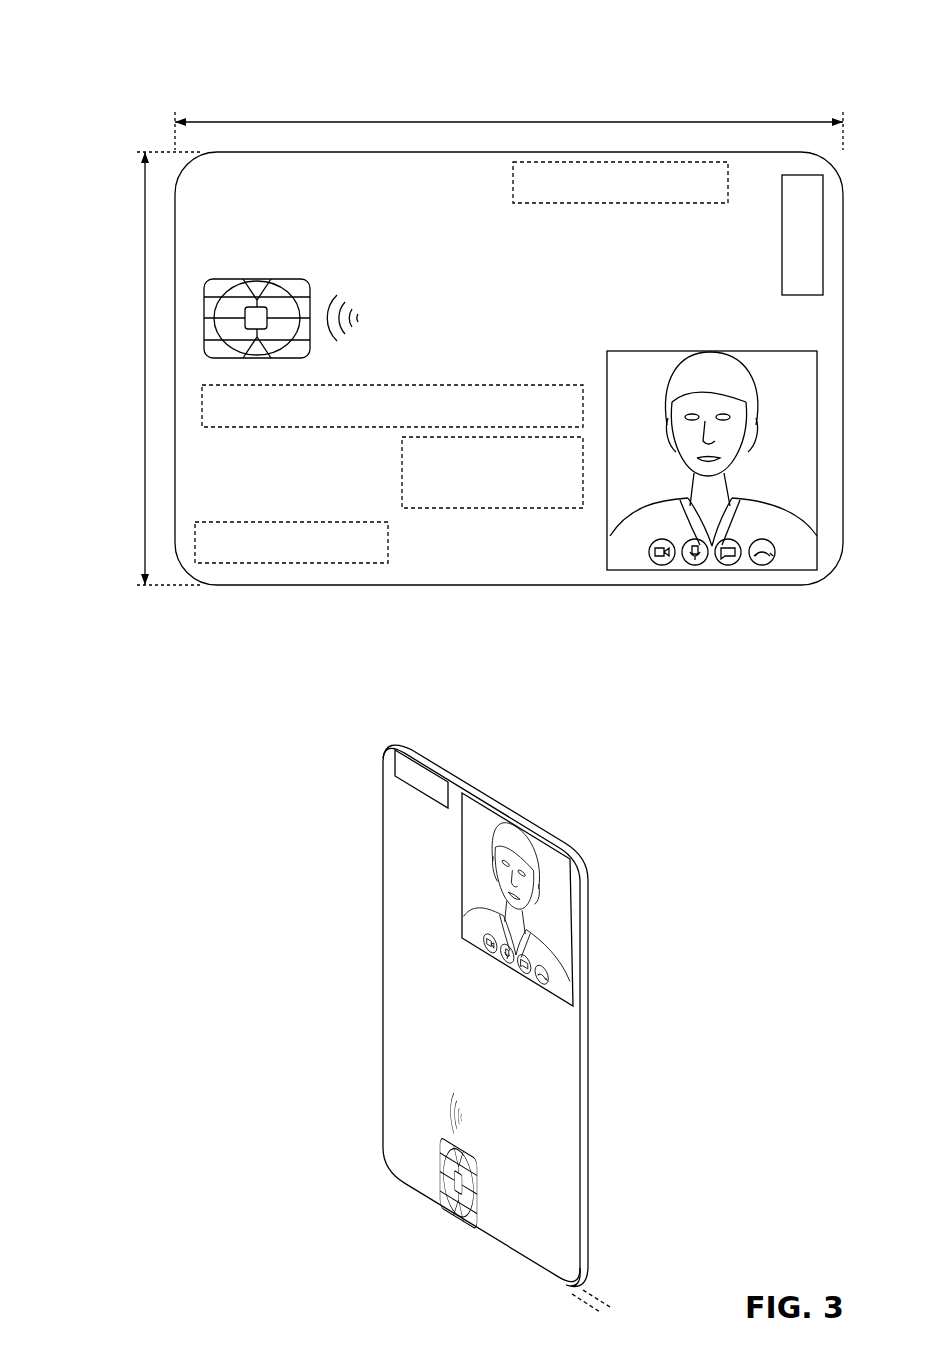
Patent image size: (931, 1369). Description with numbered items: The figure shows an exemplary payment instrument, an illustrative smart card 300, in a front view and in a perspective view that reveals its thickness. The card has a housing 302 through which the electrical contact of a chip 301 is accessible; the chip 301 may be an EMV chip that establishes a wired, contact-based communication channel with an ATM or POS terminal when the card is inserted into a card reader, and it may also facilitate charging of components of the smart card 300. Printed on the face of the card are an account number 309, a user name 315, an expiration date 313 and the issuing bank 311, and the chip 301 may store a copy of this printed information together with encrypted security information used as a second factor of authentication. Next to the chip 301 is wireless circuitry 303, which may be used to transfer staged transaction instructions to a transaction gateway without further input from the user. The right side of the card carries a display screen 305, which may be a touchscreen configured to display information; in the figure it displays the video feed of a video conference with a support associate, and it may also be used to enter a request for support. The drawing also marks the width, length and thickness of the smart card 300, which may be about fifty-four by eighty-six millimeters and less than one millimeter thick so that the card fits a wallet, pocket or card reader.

The smart card 300 is at (116, 30).
The chip 301 is at (295, 280).
The housing 302 is at (508, 587).
The wireless circuitry 303 is at (362, 314).
The display screen 305 is at (702, 571).
The account number 309 is at (477, 385).
The issuing bank 311 is at (513, 179).
The expiration date 313 is at (400, 473).
The user name 315 is at (287, 565).